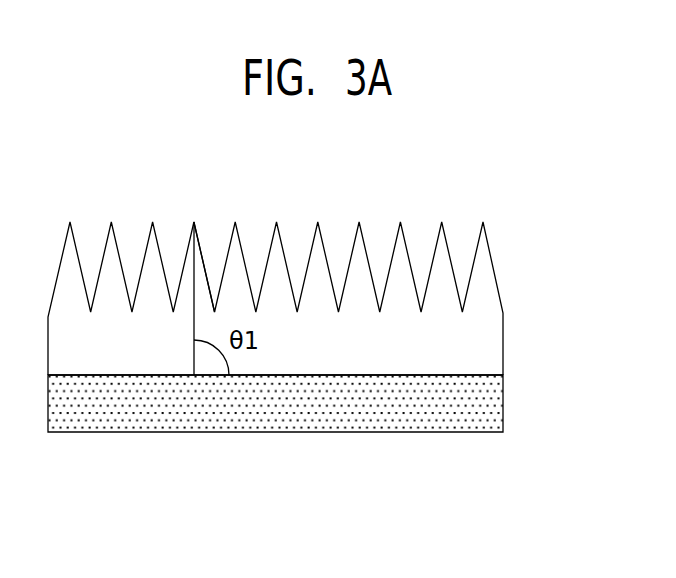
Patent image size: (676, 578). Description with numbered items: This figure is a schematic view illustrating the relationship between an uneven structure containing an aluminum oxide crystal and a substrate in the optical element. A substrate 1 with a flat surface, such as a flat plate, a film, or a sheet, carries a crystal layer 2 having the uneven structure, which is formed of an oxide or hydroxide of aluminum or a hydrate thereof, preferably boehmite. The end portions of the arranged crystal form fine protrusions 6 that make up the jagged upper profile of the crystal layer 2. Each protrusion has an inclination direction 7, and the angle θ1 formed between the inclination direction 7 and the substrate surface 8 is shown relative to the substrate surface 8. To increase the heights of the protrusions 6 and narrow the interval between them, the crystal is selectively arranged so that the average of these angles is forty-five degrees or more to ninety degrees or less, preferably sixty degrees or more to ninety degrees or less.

The substrate 1 is at (477, 411).
The crystal layer 2 is at (515, 238).
The protrusions 6 is at (202, 260).
The inclination directions 7 is at (193, 304).
The substrate surface 8 is at (363, 375).